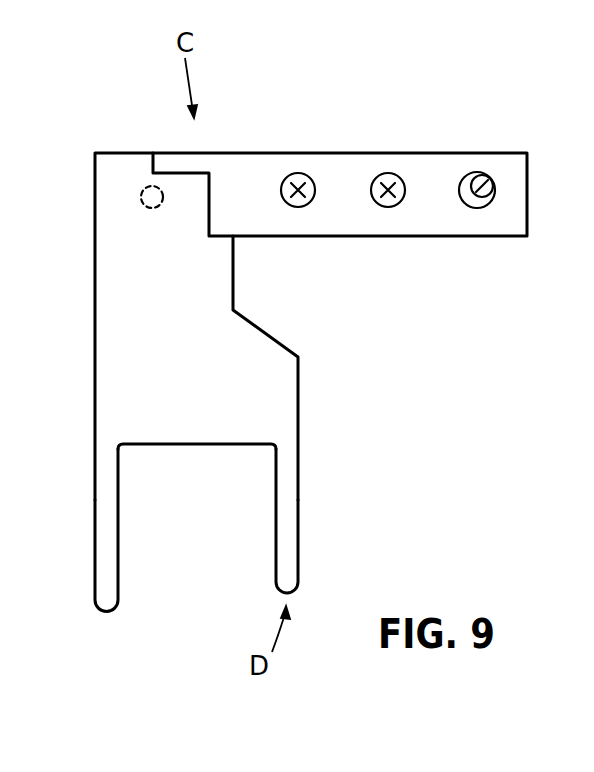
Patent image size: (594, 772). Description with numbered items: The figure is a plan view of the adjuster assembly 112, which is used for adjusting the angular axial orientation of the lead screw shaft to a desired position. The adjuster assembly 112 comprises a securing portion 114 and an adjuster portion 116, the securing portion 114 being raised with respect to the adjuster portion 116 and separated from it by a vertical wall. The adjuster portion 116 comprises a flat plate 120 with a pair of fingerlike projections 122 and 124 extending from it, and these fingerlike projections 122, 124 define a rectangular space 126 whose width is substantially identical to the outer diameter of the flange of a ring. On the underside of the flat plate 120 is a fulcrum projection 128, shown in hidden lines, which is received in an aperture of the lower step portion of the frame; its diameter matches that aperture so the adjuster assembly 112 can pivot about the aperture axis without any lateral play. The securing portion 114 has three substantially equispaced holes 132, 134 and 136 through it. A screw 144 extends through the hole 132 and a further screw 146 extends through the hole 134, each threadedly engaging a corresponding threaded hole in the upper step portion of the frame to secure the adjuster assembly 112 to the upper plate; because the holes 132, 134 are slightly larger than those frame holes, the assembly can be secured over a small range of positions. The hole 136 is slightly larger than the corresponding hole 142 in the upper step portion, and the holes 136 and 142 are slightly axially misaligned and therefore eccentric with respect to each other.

The adjuster assembly 112 is at (296, 363).
The securing portion 114 is at (297, 192).
The adjuster portion 116 is at (118, 425).
The flat plate 120 is at (287, 376).
The fingerlike projection 122 is at (95, 560).
The fingerlike projection 124 is at (290, 554).
The rectangular space 126 is at (255, 477).
The fulcrum projection 128 is at (140, 197).
The hole 132 is at (298, 173).
The hole 134 is at (388, 173).
The hole 136 is at (465, 207).
The hole 142 is at (493, 178).
The screw 144 is at (298, 207).
The further screw 146 is at (388, 207).